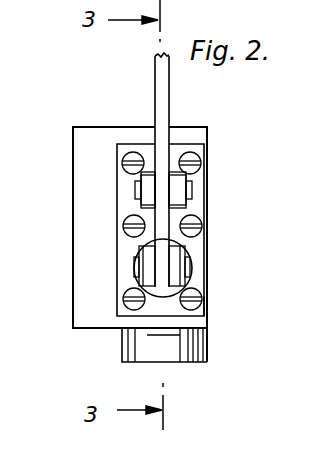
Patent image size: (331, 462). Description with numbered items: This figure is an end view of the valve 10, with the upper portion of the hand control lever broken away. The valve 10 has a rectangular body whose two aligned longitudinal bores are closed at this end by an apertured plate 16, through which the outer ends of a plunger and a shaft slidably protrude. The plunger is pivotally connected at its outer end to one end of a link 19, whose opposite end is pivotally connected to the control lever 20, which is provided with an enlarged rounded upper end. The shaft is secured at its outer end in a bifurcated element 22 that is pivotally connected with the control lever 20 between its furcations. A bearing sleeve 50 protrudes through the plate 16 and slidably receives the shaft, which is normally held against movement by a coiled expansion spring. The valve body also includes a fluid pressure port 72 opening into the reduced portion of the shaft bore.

The valve 10 is at (104, 120).
The apertured plate 16 is at (117, 185).
The link 19 is at (178, 191).
The control lever 20 is at (170, 95).
The bifurcated element 22 is at (181, 261).
The bearing sleeve 50 is at (203, 306).
The fluid pressure port 72 is at (152, 362).